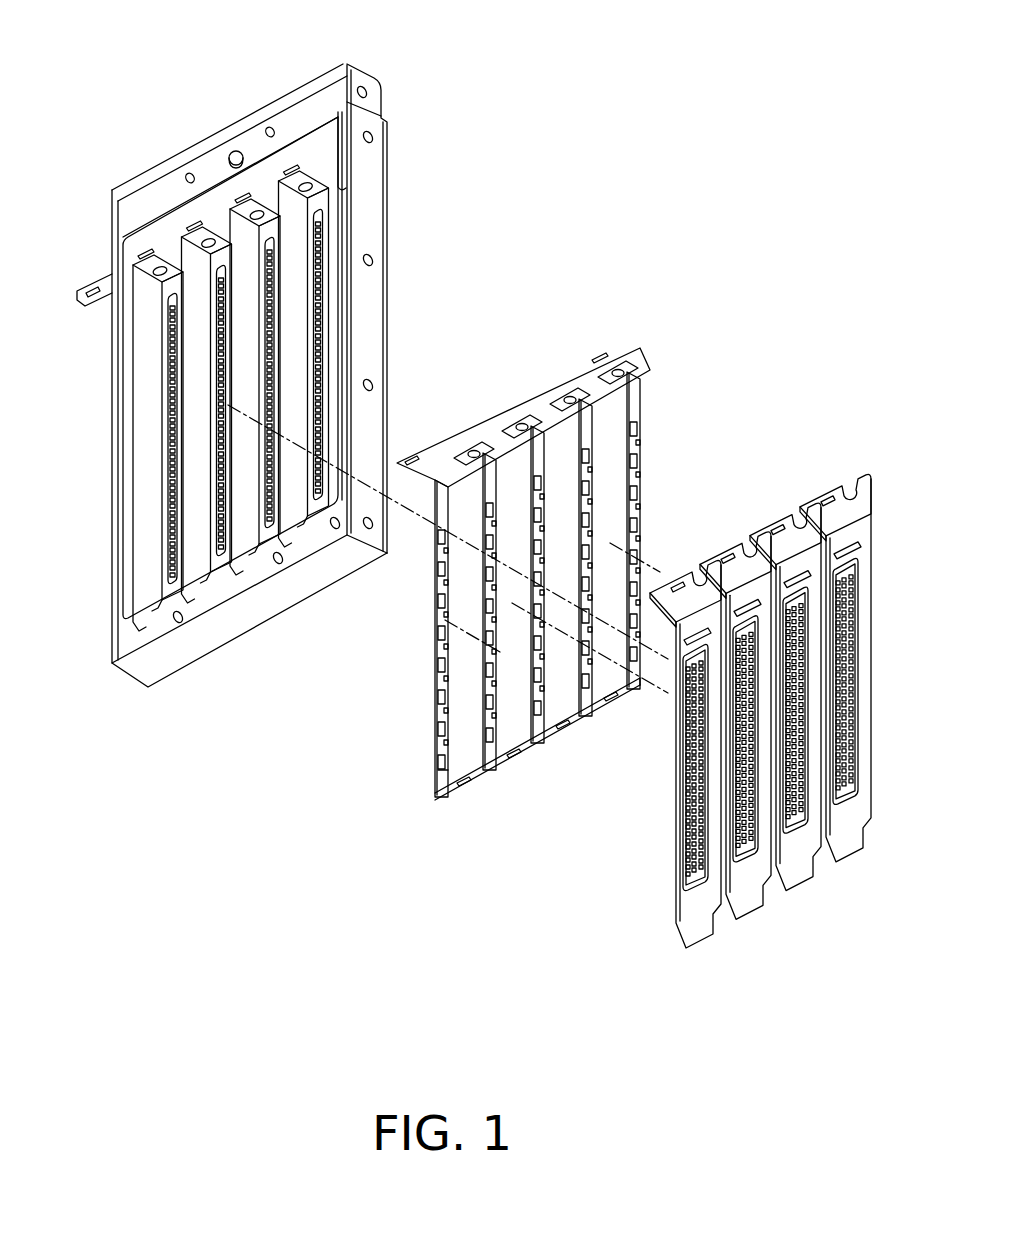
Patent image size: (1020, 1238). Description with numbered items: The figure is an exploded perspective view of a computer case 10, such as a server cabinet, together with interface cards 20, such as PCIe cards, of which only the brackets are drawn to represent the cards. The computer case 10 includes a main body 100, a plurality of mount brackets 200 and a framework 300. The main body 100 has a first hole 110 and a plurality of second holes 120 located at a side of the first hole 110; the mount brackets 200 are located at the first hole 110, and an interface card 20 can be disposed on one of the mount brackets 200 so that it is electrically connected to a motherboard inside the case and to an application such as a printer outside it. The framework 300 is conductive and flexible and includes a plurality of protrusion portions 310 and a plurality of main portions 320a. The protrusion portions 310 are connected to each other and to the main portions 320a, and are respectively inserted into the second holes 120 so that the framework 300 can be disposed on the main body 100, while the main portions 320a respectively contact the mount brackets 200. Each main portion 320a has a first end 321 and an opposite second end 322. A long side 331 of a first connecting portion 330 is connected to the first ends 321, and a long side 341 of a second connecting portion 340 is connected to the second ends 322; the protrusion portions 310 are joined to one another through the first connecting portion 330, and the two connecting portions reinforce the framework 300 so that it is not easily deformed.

The computer case 10 is at (716, 220).
The interface card 20 is at (842, 503).
The main body 100 is at (383, 183).
The first hole 110 is at (301, 148).
The second holes 120 is at (118, 280).
The mount brackets 200 is at (323, 262).
The framework 300 is at (513, 400).
The protrusion portions 310 is at (460, 434).
The main portions 320a is at (640, 512).
The first end 321 is at (442, 503).
The second end 322 is at (442, 762).
The first connecting portion 330 is at (583, 363).
The long side 331 is at (637, 370).
The second connecting portion 340 is at (477, 770).
The long side 341 is at (450, 782).